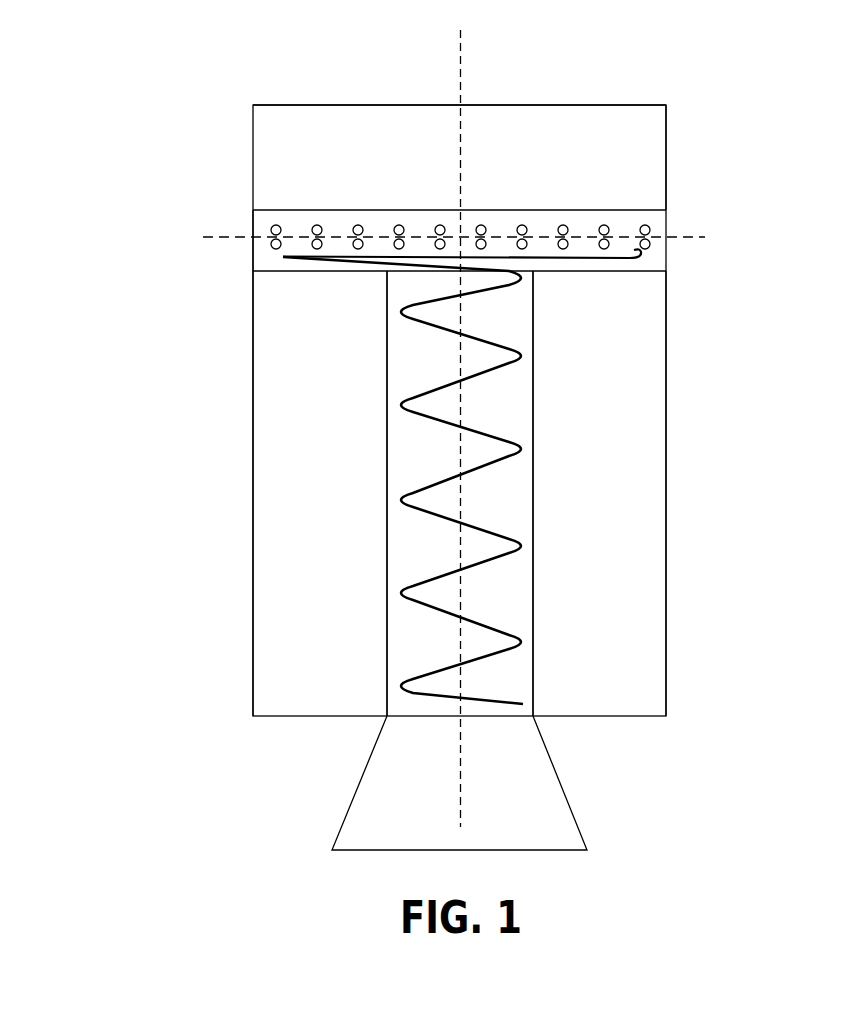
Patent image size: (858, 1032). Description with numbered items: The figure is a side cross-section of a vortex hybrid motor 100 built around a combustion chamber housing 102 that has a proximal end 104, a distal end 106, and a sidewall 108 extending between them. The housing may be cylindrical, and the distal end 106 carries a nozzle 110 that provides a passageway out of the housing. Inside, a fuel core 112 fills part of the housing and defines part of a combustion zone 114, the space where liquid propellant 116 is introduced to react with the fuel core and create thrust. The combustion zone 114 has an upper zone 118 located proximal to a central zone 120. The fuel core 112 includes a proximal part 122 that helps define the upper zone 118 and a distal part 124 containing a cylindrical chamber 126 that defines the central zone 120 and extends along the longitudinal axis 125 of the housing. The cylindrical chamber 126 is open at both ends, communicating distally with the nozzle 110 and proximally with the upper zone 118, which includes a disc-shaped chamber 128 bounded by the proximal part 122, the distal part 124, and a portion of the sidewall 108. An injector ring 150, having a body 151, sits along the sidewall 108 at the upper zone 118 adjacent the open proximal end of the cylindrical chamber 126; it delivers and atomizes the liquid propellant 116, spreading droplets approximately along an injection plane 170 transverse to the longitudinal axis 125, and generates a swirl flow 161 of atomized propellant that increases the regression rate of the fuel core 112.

The vortex hybrid motor 100 is at (763, 139).
The combustion chamber housing 102 is at (253, 180).
The proximal end 104 is at (228, 103).
The distal end 106 is at (232, 730).
The sidewall 108 is at (253, 428).
The nozzle 110 is at (570, 802).
The fuel core 112 is at (650, 398).
The combustion zone 114 is at (410, 462).
The liquid propellant 116 is at (641, 251).
The upper zone 118 is at (668, 221).
The central zone 120 is at (503, 493).
The proximal part 122 is at (638, 118).
The distal part 124 is at (627, 645).
The longitudinal axis 125 is at (462, 72).
The cylindrical chamber 126 is at (498, 601).
The disc-shaped chamber 128 is at (258, 227).
The injector ring 150 is at (590, 218).
The body 151 is at (340, 222).
The swirl flow 161 is at (498, 424).
The injection plane 170 is at (233, 238).